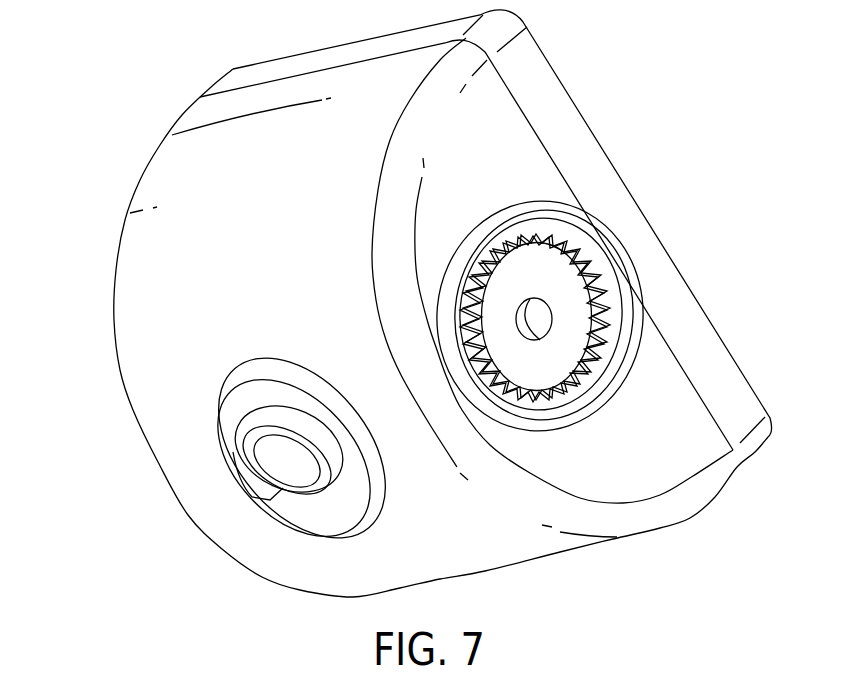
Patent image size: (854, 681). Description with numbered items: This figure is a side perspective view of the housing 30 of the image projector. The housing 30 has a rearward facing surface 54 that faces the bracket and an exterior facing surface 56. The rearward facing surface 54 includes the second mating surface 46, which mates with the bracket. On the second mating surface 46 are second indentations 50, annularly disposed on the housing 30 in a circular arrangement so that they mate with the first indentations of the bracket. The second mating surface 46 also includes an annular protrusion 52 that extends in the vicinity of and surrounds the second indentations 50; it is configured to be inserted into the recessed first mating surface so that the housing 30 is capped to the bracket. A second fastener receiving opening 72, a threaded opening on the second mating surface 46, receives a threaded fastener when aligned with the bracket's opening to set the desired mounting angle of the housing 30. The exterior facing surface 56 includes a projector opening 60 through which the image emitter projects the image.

The housing 30 is at (417, 303).
The second mating surface 46 is at (572, 407).
The second indentations 50 is at (508, 238).
The annular protrusion 52 is at (630, 363).
The rearward facing surface 54 is at (487, 147).
The exterior facing surface 56 is at (175, 272).
The projector opening 60 is at (303, 485).
The second fastener receiving opening 72 is at (540, 313).